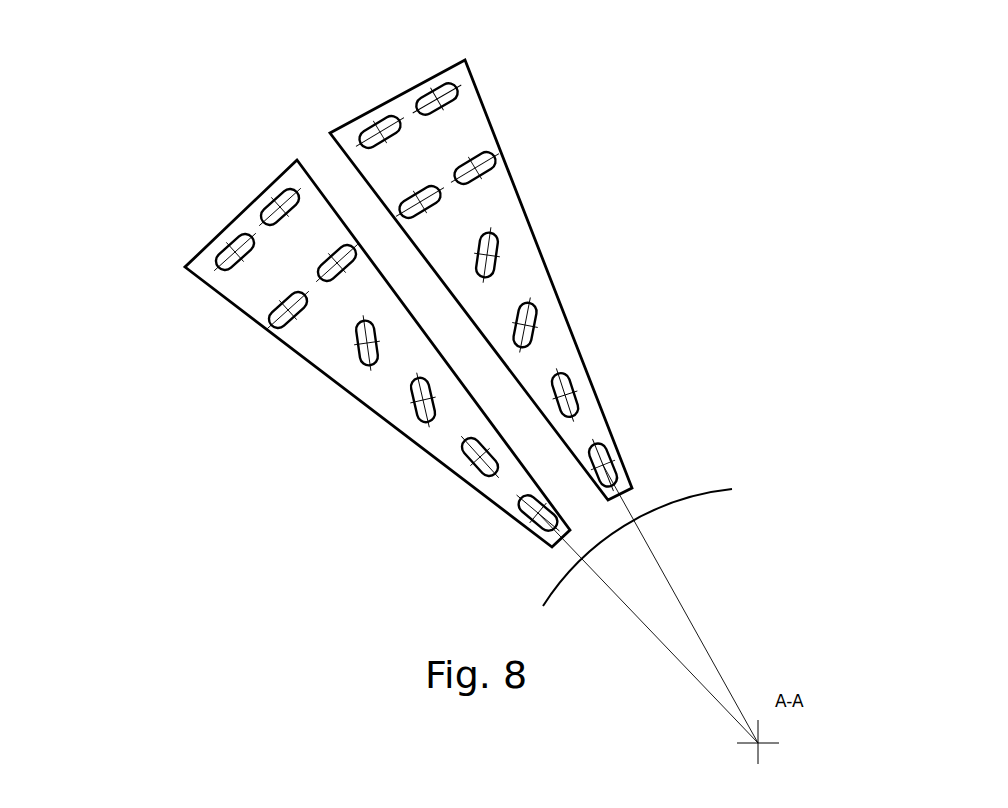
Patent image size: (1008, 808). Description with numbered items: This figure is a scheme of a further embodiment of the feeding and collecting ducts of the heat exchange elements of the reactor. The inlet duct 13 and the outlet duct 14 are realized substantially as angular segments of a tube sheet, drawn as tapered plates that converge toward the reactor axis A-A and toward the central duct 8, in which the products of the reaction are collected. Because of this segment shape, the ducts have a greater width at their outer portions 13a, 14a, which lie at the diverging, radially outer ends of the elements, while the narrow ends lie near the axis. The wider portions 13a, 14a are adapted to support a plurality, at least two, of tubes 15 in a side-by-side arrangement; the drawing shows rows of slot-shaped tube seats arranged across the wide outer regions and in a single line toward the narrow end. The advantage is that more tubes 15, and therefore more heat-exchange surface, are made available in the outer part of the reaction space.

The central duct 8 is at (705, 487).
The inlet duct 13 is at (484, 280).
The outlet duct 14 is at (547, 168).
The outer portion of inlet duct 13a is at (309, 353).
The outer portion of outlet duct 14a is at (173, 313).
The tubes 15 is at (275, 330).